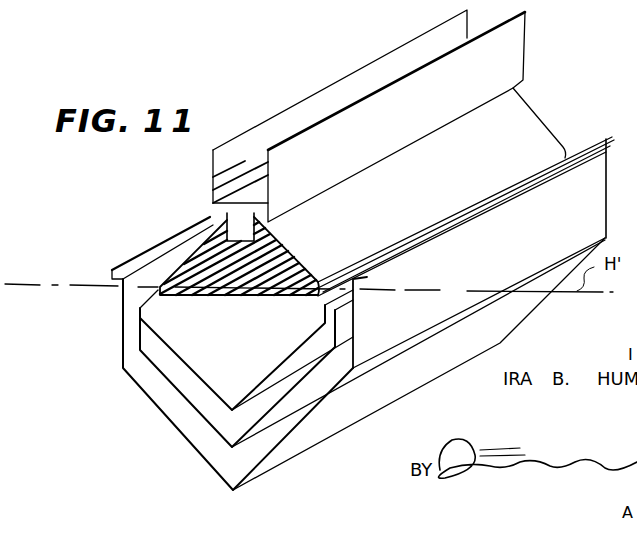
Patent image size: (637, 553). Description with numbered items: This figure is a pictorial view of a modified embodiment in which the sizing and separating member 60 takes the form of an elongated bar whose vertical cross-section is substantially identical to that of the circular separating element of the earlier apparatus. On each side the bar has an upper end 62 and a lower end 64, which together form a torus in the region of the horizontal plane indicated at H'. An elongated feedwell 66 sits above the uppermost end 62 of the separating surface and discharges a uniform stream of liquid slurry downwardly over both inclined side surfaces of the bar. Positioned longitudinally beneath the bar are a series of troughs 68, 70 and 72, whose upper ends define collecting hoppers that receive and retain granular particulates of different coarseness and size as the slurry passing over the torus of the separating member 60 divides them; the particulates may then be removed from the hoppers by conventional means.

The sizing and separating member 60 is at (555, 121).
The upper end 62 is at (520, 90).
The lower end 64 is at (565, 158).
The elongated feedwell 66 is at (353, 80).
The trough 68 is at (300, 398).
The trough 70 is at (353, 372).
The trough 72 is at (438, 305).